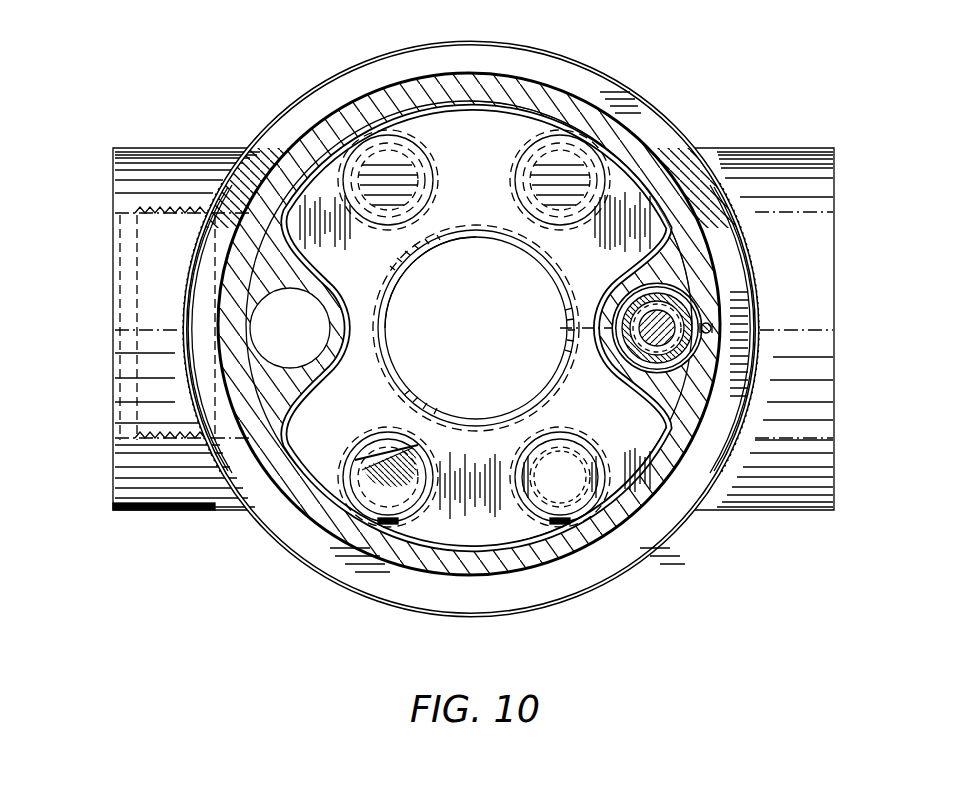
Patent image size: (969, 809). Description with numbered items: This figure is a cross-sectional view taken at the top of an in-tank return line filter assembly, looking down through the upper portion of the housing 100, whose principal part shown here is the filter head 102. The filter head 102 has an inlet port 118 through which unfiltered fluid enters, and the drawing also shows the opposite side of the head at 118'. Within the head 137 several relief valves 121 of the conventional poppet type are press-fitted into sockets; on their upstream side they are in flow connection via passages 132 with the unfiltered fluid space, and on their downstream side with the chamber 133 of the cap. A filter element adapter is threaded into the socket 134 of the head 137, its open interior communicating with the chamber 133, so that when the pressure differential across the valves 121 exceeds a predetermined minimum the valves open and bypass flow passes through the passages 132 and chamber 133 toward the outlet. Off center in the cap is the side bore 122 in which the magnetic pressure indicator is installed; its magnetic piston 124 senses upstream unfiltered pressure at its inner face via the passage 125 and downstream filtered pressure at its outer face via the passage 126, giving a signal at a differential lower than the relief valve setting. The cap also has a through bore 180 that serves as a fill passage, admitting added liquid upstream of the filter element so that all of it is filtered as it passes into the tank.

The housing 100 is at (239, 140).
The filter head 102 is at (368, 90).
The inlet port 118 is at (132, 329).
The pipe 118' is at (807, 329).
The relief valves 121 is at (522, 152).
The side bore 122 is at (640, 355).
The magnetic piston 124 is at (655, 340).
The passage 125 is at (712, 326).
The passage 126 is at (598, 332).
The passages 132 is at (600, 530).
The chamber 133 is at (497, 314).
The socket 134 is at (385, 360).
The head 137 is at (617, 128).
The through bore 180 is at (318, 352).